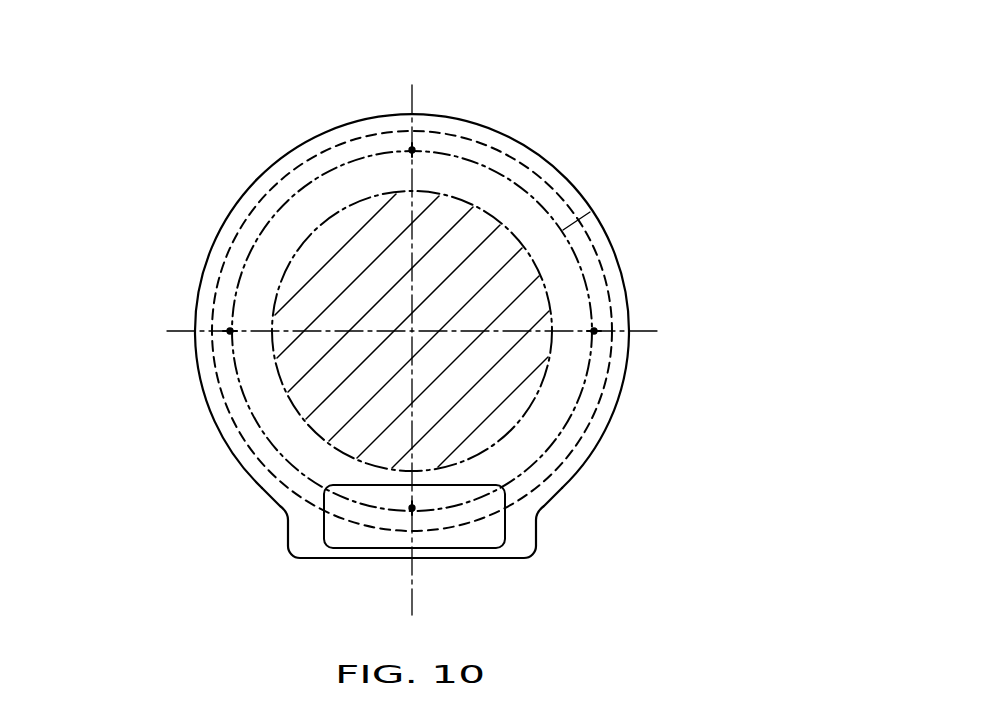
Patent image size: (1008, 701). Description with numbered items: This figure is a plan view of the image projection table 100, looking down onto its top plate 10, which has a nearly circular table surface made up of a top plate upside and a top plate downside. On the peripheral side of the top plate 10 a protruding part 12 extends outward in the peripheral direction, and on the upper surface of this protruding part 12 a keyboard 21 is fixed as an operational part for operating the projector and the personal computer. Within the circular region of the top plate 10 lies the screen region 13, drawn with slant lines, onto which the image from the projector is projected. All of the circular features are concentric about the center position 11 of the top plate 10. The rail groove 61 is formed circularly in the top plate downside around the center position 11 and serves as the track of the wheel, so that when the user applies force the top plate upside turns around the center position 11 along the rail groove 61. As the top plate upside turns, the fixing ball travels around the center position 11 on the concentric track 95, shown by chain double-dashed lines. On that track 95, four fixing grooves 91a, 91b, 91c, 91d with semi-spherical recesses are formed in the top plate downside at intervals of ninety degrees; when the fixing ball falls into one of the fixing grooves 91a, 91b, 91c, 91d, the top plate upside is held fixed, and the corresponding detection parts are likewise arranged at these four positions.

The image projection table 100 is at (620, 64).
The top plate 10 is at (544, 156).
The center position 11 is at (416, 331).
The protruding part 12 is at (524, 530).
The screen region 13 is at (510, 287).
The keyboard 21 is at (337, 537).
The rail groove 61 is at (600, 404).
The track 95 is at (592, 211).
The fixing groove 91a is at (413, 508).
The fixing groove 91b is at (597, 329).
The fixing groove 91c is at (414, 150).
The fixing groove 91d is at (228, 330).